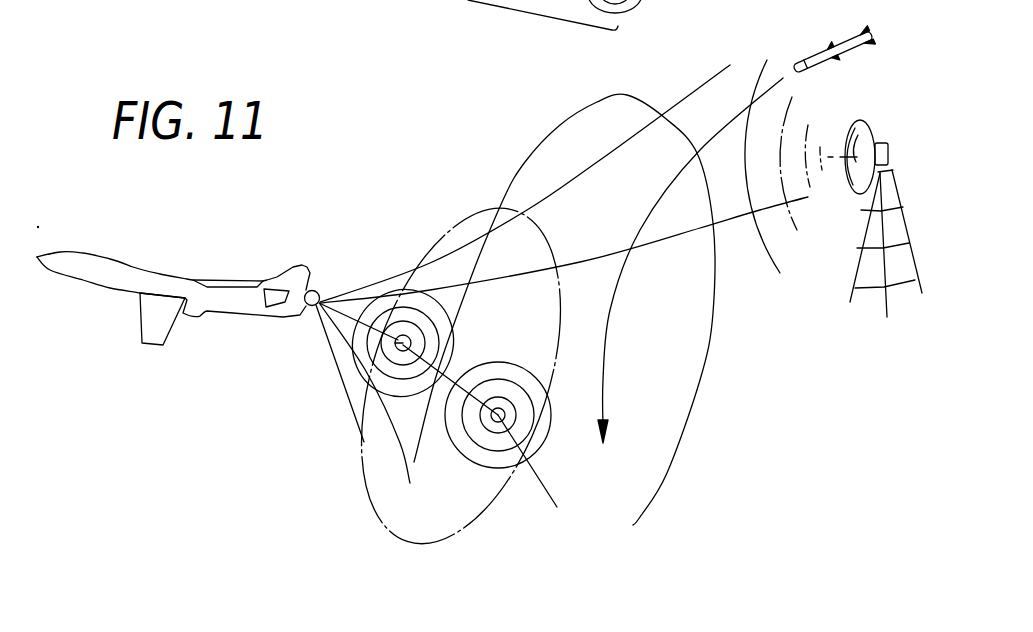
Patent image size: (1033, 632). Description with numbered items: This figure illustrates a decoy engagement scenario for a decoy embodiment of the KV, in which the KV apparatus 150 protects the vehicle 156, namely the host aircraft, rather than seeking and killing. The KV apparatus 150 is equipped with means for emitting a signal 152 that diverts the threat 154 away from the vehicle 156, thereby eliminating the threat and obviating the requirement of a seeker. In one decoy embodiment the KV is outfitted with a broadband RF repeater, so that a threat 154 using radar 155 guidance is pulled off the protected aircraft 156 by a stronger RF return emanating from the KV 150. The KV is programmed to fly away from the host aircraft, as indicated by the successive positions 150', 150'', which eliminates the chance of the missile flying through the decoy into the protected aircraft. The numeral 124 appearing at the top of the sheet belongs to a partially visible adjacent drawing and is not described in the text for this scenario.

The component of adjacent figure 124 is at (505, 8).
The KV apparatus 150 is at (557, 274).
The KV 150' is at (378, 361).
The KV 150'' is at (487, 442).
The signal 152 is at (447, 318).
The threat 154 is at (820, 54).
The radar 155 is at (853, 183).
The vehicle 156 is at (133, 270).